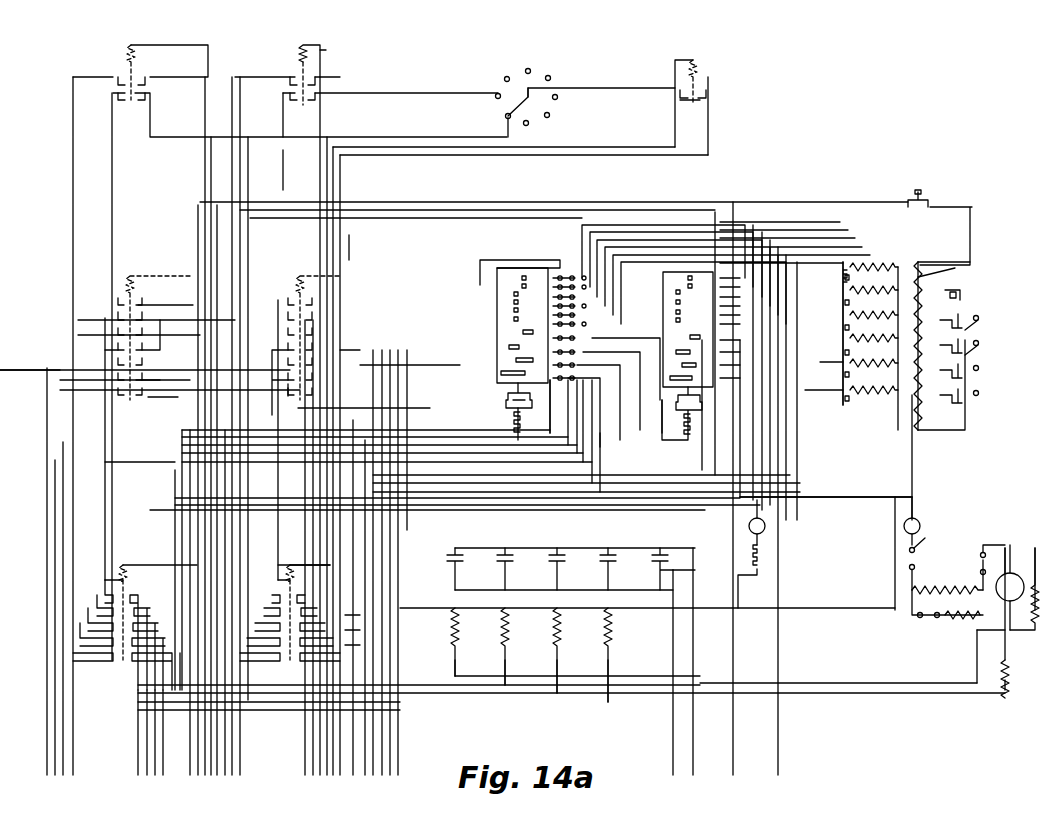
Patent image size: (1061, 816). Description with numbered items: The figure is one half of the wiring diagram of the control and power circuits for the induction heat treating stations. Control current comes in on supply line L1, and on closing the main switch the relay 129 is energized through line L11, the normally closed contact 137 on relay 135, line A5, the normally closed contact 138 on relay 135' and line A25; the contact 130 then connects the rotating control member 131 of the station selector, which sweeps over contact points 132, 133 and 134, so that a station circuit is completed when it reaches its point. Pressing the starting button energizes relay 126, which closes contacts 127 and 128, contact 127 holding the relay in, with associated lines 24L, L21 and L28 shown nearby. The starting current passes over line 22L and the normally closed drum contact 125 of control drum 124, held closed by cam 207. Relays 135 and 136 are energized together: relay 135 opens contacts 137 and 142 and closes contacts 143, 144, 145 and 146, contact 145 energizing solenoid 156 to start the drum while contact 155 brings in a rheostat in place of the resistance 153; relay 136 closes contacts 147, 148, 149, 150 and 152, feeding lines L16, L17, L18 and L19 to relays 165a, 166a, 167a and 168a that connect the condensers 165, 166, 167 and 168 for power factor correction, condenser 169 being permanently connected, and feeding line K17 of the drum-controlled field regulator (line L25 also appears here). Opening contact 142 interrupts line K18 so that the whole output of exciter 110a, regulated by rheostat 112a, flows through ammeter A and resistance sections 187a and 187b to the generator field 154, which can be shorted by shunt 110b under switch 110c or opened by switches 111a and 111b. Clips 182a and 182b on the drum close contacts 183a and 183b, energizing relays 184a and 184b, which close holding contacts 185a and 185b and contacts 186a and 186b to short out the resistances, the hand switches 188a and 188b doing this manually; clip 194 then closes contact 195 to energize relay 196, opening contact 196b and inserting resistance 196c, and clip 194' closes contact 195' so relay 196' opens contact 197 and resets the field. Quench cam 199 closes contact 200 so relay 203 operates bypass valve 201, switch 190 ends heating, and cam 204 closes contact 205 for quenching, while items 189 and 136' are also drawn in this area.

The relay 126 is at (298, 54).
The relay 24L is at (277, 75).
The line L21 is at (320, 64).
The contact 127 is at (315, 82).
The contact 128 is at (293, 105).
The line L28 is at (288, 168).
The contact point 134 is at (507, 77).
The contact point 133 is at (496, 98).
The contact point 132 is at (501, 118).
The rotating control member 131 is at (520, 100).
The supply line L1 is at (678, 69).
The relay 129 is at (701, 66).
The contact 130 is at (684, 101).
The line L11 is at (718, 100).
The relay 135' is at (154, 327).
The line A5 is at (152, 301).
The normally closed contact 138 is at (151, 361).
The line A25 is at (56, 376).
The relay 135 is at (313, 327).
The contact 143 is at (296, 305).
The contact 144 is at (290, 329).
The contact 145 is at (290, 344).
The contact 146 is at (320, 363).
The normally closed contact 137 is at (320, 378).
The contact 142 is at (292, 390).
The line L25 is at (349, 236).
The line K17 is at (469, 260).
The control drum 124 is at (542, 260).
The clip 194' is at (489, 270).
The clip 194 is at (489, 281).
The clip 182b is at (510, 306).
The clip 182a is at (510, 320).
The quench cam 204 is at (518, 334).
The contact 189 is at (500, 348).
The quench cam 199 is at (504, 362).
The cam 207 is at (502, 374).
The solenoid 156 is at (506, 399).
The contact 155 is at (506, 418).
The contact 195' is at (609, 272).
The contact 195 is at (610, 283).
The contact 183b is at (578, 306).
The contact 183a is at (576, 325).
The contact 205 is at (574, 337).
The switch 190 is at (576, 352).
The contact 200 is at (576, 367).
The drum contact 125 is at (572, 382).
The line 22L is at (564, 411).
The contact 197 is at (846, 264).
The relay 196' is at (880, 256).
The relay 196 is at (871, 300).
The relay 184b is at (858, 358).
The relay 184a is at (858, 383).
The holding contact 185b is at (842, 365).
The holding contact 185a is at (842, 392).
The resistance section 187b is at (904, 395).
The resistance section 187a is at (904, 417).
The resistance 196c is at (941, 277).
The manually closed contact 196b is at (961, 289).
The hand operated switch 188b is at (982, 356).
The contact 186b is at (956, 375).
The hand operated switch 188a is at (980, 394).
The contact 186a is at (970, 415).
The line K18 is at (838, 497).
The bypass valve 201 is at (744, 527).
The relay 203 is at (752, 552).
The ammeter A is at (912, 521).
The switch 111a is at (922, 534).
The switch 111b is at (982, 557).
The field 154 is at (925, 582).
The switch 110c is at (928, 622).
The shunt 110b is at (954, 628).
The exciter 110a is at (1024, 535).
The rheostat 112a is at (1036, 640).
The resistance 153 is at (1002, 700).
The relay 136' is at (126, 616).
The relay 136 is at (304, 599).
The contact 147 is at (288, 594).
The contact 148 is at (288, 607).
The contact 149 is at (359, 610).
The contact 150 is at (359, 626).
The contact 152 is at (359, 647).
The condenser 165 is at (456, 566).
The condenser 166 is at (506, 566).
The condenser 167 is at (557, 566).
The condenser 168 is at (609, 566).
The condenser 169 is at (656, 566).
The relay 165a is at (455, 624).
The relay 166a is at (506, 624).
The relay 167a is at (559, 624).
The relay 168a is at (610, 624).
The line L16 is at (455, 652).
The line L17 is at (505, 652).
The line L18 is at (558, 652).
The line L19 is at (610, 652).